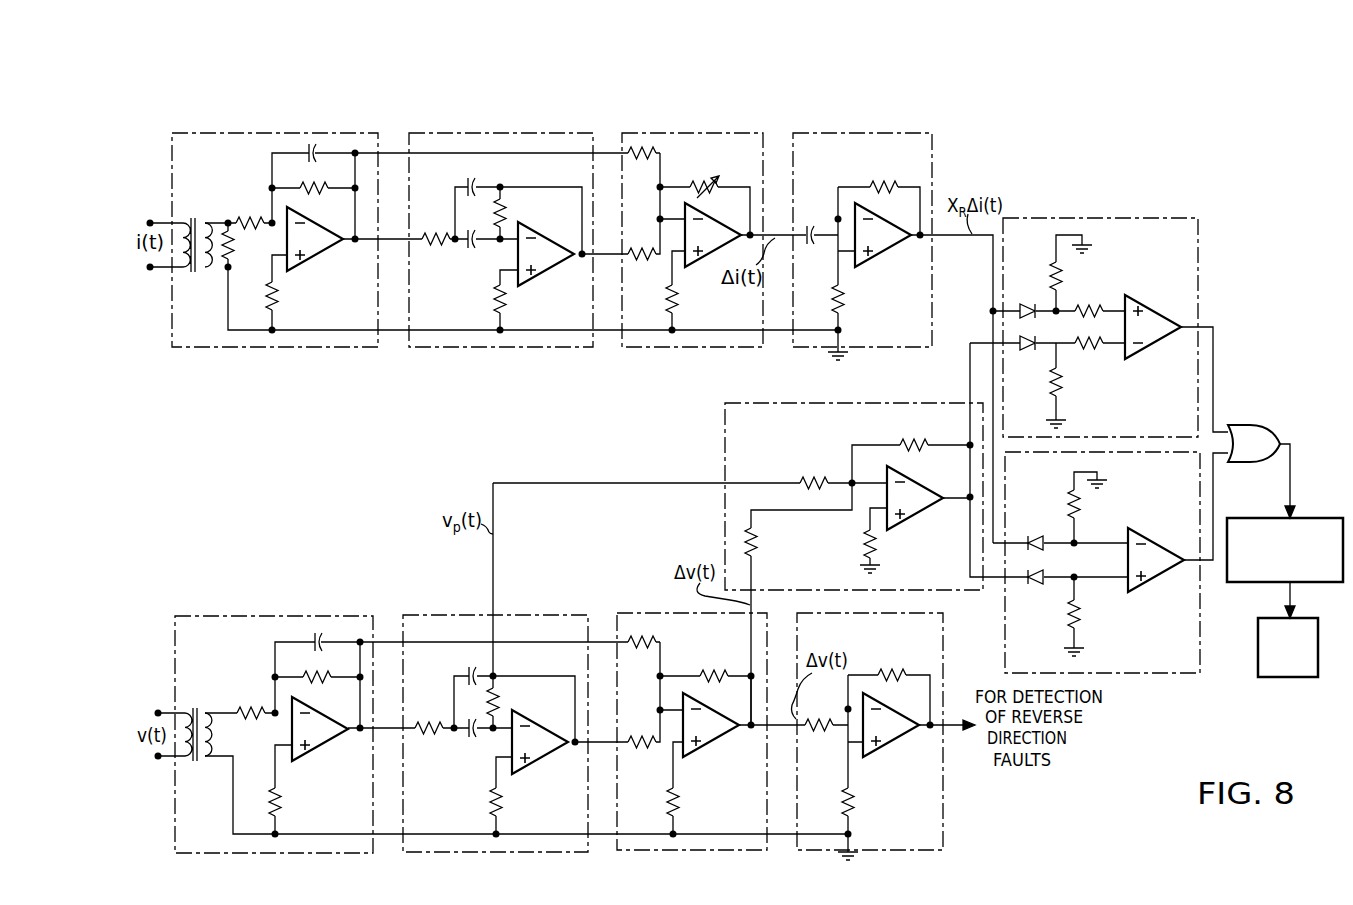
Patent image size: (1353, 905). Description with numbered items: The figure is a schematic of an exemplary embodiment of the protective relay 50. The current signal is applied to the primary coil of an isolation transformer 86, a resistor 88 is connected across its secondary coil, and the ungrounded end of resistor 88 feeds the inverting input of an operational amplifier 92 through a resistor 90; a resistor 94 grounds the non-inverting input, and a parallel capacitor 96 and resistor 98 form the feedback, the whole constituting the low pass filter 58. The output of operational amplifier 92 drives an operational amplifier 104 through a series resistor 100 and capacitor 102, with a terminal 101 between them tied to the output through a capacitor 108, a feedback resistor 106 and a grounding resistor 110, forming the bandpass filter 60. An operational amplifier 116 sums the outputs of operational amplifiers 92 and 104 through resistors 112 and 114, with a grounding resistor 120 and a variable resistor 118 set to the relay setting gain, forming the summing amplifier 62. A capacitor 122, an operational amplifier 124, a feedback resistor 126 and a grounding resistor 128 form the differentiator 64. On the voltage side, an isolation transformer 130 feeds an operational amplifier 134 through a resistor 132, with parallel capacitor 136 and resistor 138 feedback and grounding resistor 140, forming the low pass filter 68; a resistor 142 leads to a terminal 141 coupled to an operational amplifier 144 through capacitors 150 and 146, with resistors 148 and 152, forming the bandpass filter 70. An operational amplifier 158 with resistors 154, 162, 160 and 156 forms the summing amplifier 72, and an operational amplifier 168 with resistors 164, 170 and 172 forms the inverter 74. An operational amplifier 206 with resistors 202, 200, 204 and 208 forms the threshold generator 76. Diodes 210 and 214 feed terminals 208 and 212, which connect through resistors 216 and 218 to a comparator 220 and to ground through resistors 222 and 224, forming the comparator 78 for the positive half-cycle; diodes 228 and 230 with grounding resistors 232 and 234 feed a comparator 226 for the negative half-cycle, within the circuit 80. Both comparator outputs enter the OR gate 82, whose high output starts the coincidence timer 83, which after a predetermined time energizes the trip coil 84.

The protective relay 50 is at (1000, 163).
The low pass filter 58 is at (255, 347).
The bandpass filter 60 is at (512, 347).
The summing amplifier 62 is at (695, 347).
The differentiator 64 is at (870, 347).
The low pass filter 68 is at (263, 616).
The bandpass filter 70 is at (469, 615).
The summing amplifier 72 is at (640, 613).
The inverter 74 is at (943, 641).
The threshold generator 76 is at (725, 403).
The comparator 78 is at (1094, 218).
The reverse direction comparator circuit 80 is at (1183, 673).
The OR gate 82 is at (1257, 428).
The coincidence timer 83 is at (1258, 518).
The trip coil 84 is at (1258, 642).
The isolation transformer 86 is at (194, 219).
The resistor 88 is at (231, 246).
The resistor 90 is at (246, 219).
The operational amplifier 92 is at (317, 221).
The resistor 94 is at (276, 300).
The capacitor 96 is at (303, 156).
The resistor 98 is at (325, 181).
The resistor 100 is at (434, 231).
The terminal 101 is at (455, 256).
The capacitor 102 is at (474, 248).
The operational amplifier 104 is at (544, 234).
The resistor 106 is at (505, 211).
The capacitor 108 is at (471, 186).
The resistor 110 is at (503, 303).
The resistor 112 is at (638, 152).
The resistor 114 is at (640, 249).
The operational amplifier 116 is at (708, 214).
The variable resistor 118 is at (703, 183).
The resistor 120 is at (667, 300).
The capacitor 122 is at (807, 224).
The operational amplifier 124 is at (878, 255).
The resistor 126 is at (882, 179).
The resistor 128 is at (843, 305).
The isolation transformer 130 is at (196, 706).
The resistor 132 is at (246, 707).
The operational amplifier 134 is at (317, 708).
The capacitor 136 is at (321, 644).
The resistor 138 is at (316, 675).
The resistor 140 is at (282, 807).
The terminal 141 is at (454, 734).
The resistor 142 is at (431, 721).
The operational amplifier 144 is at (536, 718).
The capacitor 146 is at (468, 675).
The resistor 148 is at (499, 690).
The capacitor 150 is at (465, 712).
The resistor 152 is at (487, 801).
The resistor 154 is at (638, 734).
The resistor 156 is at (679, 801).
The operational amplifier 158 is at (713, 706).
The resistor 160 is at (702, 669).
The resistor 162 is at (638, 639).
The resistor 164 is at (816, 731).
The operational amplifier 168 is at (891, 707).
The resistor 170 is at (886, 670).
The resistor 172 is at (857, 801).
The resistor 200 is at (757, 543).
The resistor 202 is at (819, 479).
The resistor 204 is at (925, 441).
The operational amplifier 206 is at (925, 485).
The resistor 208 is at (876, 541).
The diode 210 is at (1038, 355).
The terminal 212 is at (1059, 306).
The diode 214 is at (1029, 308).
The resistor 216 is at (1098, 350).
The resistor 218 is at (1094, 303).
The comparator 220 is at (1148, 304).
The resistor 222 is at (1064, 384).
The resistor 224 is at (1051, 264).
The comparator 226 is at (1156, 541).
The diode 228 is at (1036, 536).
The diode 230 is at (1043, 591).
The resistor 232 is at (1080, 506).
The resistor 234 is at (1080, 622).